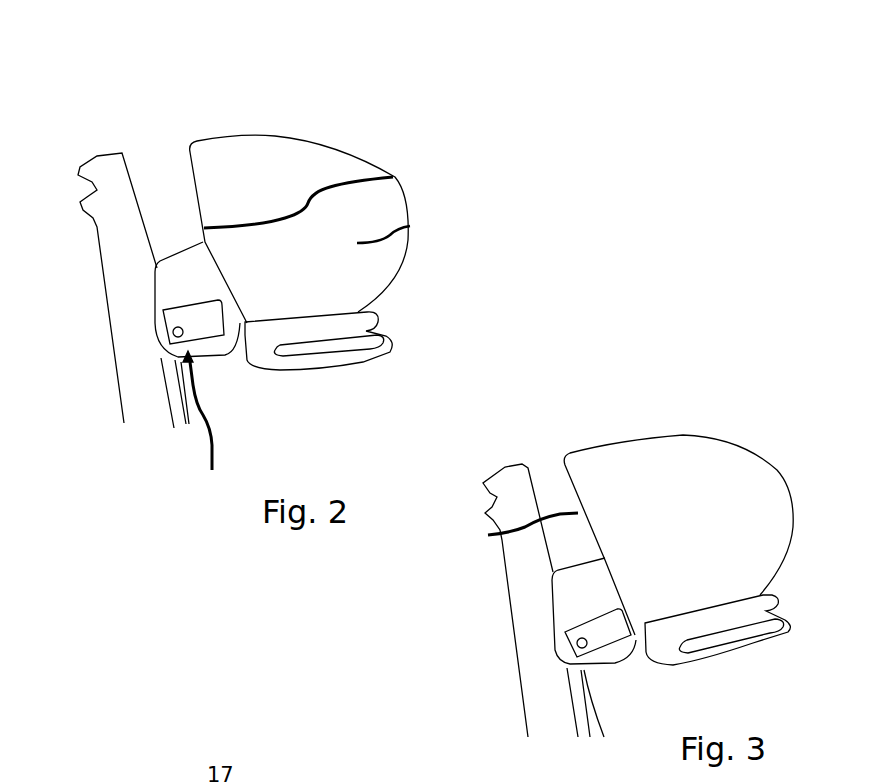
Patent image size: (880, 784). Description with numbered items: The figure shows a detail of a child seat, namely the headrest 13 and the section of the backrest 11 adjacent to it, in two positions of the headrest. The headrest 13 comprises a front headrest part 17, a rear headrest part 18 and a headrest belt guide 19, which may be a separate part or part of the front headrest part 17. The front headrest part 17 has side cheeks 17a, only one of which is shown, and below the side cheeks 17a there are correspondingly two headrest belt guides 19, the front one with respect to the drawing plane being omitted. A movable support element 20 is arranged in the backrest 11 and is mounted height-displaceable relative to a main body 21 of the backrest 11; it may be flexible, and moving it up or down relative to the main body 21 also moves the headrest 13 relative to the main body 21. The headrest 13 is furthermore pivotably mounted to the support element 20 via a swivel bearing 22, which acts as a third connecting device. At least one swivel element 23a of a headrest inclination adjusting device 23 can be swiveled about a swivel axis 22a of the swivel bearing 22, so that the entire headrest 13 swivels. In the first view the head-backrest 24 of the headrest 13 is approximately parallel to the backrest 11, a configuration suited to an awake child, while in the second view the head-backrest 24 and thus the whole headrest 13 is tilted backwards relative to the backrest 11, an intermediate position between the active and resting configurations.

In FIG. 2, the backrest 11 is at (97, 145).
In FIG. 2, the headrest 13 is at (307, 123).
In FIG. 3, the headrest 13 is at (713, 435).
In FIG. 2, the front headrest part 17 is at (255, 172).
In FIG. 3, the front headrest part 17 is at (660, 483).
In FIG. 2, the side cheeks 17a is at (410, 226).
In FIG. 2, the rear headrest part 18 is at (185, 267).
In FIG. 2, the headrest belt guide 19 is at (317, 347).
In FIG. 2, the support element 20 is at (173, 402).
In FIG. 2, the main body 21 is at (123, 273).
In FIG. 2, the swivel bearing 22 is at (172, 330).
In FIG. 2, the swivel axis 22a is at (168, 337).
In FIG. 3, the swivel axis 22a is at (575, 647).
In FIG. 2, the headrest inclination adjusting device 23 is at (205, 428).
In FIG. 2, the swivel element 23a is at (203, 328).
In FIG. 2, the head-backrest 24 is at (393, 177).
In FIG. 3, the head-backrest 24 is at (519, 530).